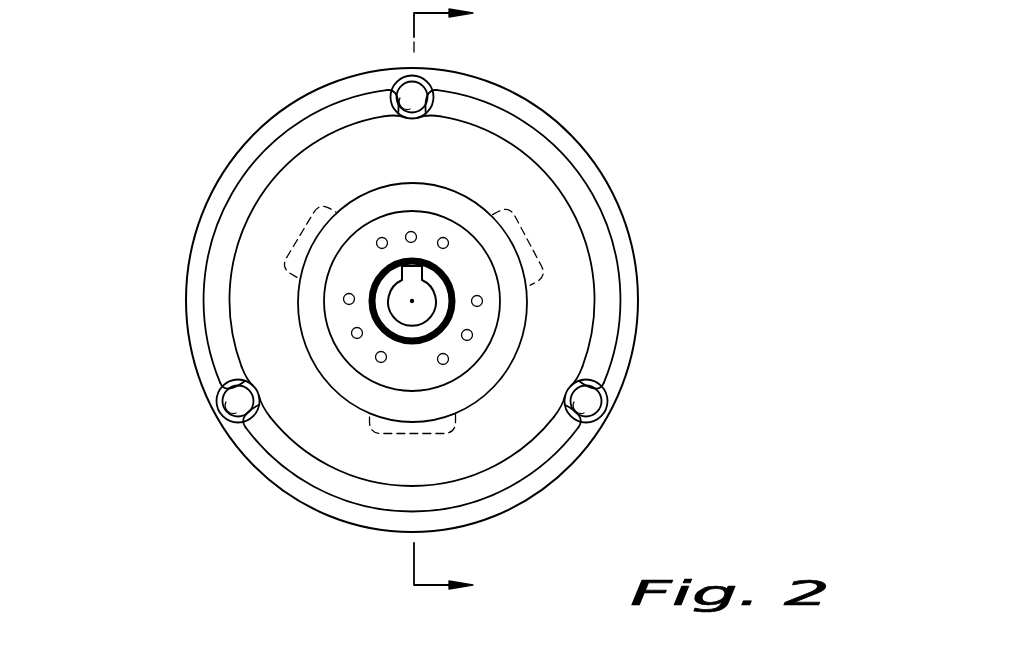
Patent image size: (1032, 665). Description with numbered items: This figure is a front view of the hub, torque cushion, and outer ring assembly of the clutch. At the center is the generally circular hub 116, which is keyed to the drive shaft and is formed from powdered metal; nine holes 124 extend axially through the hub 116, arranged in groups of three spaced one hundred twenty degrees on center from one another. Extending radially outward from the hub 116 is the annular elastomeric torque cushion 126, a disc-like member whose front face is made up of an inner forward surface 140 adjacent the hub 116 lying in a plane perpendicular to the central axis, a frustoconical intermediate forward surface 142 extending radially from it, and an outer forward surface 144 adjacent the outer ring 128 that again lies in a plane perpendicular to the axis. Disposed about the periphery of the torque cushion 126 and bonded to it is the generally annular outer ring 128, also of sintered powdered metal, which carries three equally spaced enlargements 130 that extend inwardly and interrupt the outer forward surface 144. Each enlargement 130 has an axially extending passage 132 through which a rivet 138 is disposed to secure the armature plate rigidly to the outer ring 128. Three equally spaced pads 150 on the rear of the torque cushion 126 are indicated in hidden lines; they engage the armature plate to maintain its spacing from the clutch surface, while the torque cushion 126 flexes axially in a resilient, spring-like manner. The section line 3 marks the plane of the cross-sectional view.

The section line 3- 3 is at (454, 307).
The hub 116 is at (527, 287).
The holes 124 is at (446, 238).
The torque cushion 126 is at (622, 258).
The outer ring 128 is at (550, 122).
The enlargements 130 is at (424, 118).
The passages 132 is at (402, 117).
The rivets 138 is at (422, 93).
The inner forward surface 140 is at (296, 294).
The intermediate forward surface 142 is at (253, 240).
The outer forward surface 144 is at (213, 321).
The pads 150 is at (296, 229).